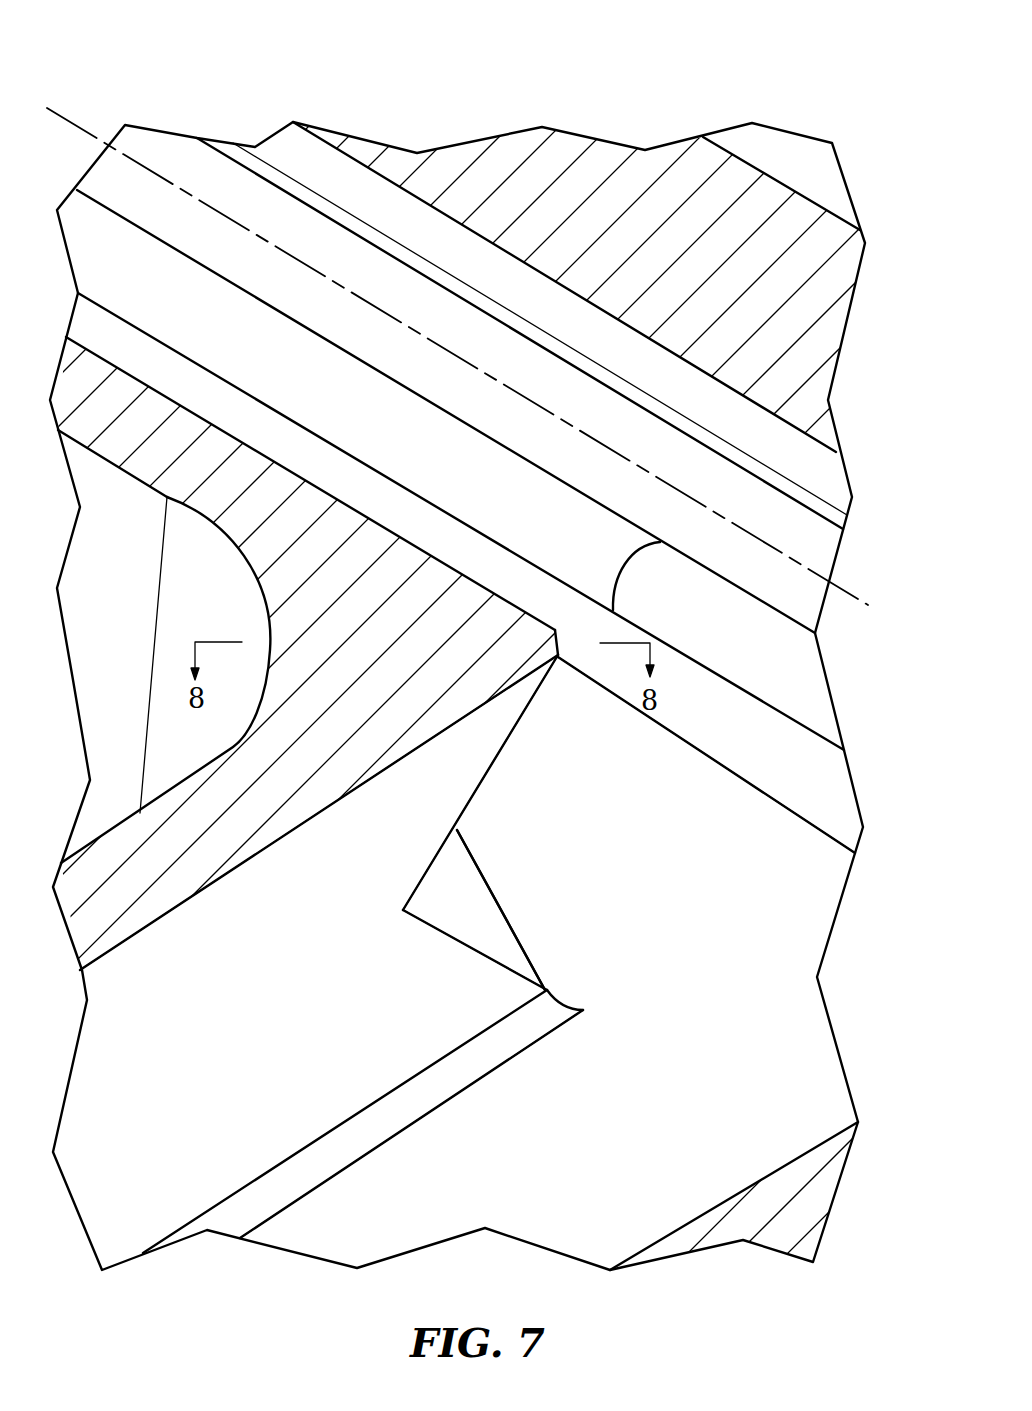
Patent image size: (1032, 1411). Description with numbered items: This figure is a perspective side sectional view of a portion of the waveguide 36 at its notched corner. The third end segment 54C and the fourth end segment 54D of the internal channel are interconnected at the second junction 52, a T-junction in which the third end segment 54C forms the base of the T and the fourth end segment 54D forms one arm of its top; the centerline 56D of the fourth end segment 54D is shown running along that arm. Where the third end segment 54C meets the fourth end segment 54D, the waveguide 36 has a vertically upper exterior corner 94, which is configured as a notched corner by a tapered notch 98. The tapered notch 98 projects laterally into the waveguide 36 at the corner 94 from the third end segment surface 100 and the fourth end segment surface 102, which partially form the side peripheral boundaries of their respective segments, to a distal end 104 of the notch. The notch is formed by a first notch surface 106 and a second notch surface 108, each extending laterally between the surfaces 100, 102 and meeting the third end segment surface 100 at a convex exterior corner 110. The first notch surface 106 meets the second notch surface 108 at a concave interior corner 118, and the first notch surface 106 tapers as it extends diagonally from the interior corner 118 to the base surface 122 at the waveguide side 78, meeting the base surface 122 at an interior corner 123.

The waveguide 36 is at (714, 86).
The centerline of the fourth end segment 56D is at (81, 126).
The fourth end segment 54D is at (103, 263).
The third end segment 54C is at (370, 1225).
The fourth end segment surface 102 is at (332, 492).
The second junction 52 is at (877, 787).
The second notch surface 108 is at (487, 775).
The upper waveguide corner 94 is at (620, 804).
The tapered notch 98 is at (497, 855).
The exterior corner 110 is at (498, 958).
The first notch surface 106 is at (455, 900).
The distal end of the notch 104 is at (319, 954).
The interior corner 118 is at (405, 908).
The interior corner 123 is at (575, 997).
The waveguide side 78 is at (591, 1100).
The base surface 122 is at (762, 947).
The third end segment surface 100 is at (213, 885).